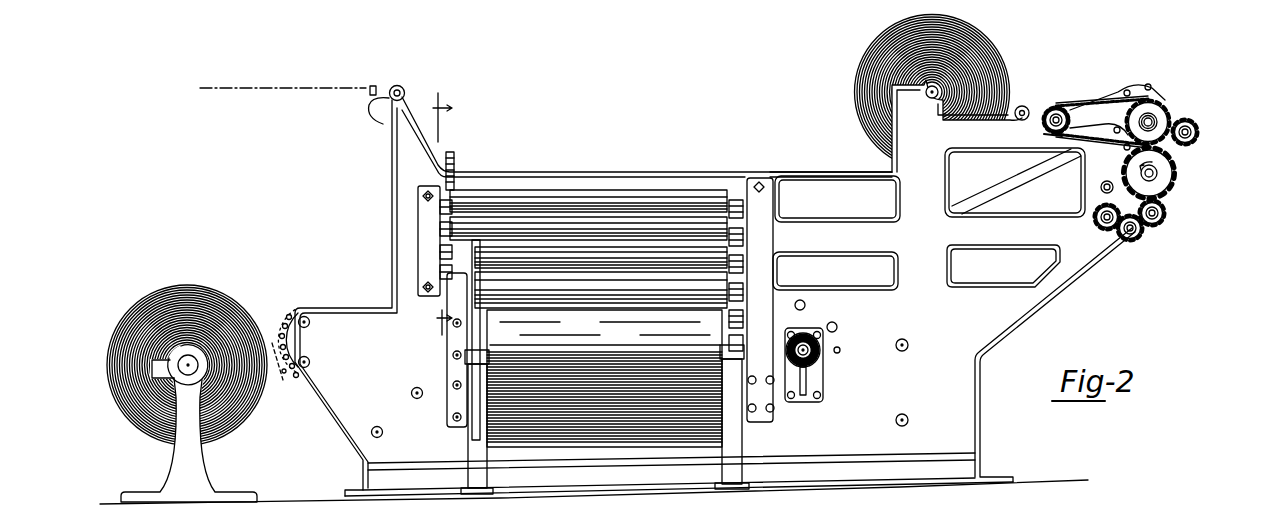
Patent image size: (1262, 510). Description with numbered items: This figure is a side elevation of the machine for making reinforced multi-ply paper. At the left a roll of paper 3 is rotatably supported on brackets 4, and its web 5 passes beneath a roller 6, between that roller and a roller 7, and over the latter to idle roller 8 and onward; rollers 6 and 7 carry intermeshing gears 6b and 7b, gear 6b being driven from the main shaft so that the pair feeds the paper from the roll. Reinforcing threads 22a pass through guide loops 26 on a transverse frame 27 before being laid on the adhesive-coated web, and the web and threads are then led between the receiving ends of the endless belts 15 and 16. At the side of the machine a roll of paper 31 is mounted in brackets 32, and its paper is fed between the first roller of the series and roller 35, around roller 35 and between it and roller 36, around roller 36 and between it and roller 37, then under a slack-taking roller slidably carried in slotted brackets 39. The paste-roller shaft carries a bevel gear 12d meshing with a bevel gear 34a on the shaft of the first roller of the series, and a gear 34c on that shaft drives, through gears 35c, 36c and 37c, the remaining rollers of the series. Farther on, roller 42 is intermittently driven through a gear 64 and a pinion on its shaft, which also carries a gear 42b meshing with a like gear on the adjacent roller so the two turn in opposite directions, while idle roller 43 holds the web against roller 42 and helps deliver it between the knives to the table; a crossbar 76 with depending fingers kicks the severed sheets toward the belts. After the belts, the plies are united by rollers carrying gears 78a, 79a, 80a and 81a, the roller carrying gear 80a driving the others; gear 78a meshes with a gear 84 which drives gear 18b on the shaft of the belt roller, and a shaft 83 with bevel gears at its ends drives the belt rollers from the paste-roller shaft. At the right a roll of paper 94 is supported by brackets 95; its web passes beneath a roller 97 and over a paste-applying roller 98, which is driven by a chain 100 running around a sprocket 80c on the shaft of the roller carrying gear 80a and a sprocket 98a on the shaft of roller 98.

The roll of paper 3 is at (151, 301).
The brackets 4 is at (197, 460).
The web 5 is at (272, 343).
The roller 6 is at (296, 380).
The gear 6b is at (283, 375).
The roller 7 is at (293, 312).
The gear 7b is at (302, 310).
The idle roller 8 is at (436, 214).
The bevel gear 12d is at (823, 338).
The endless belt 15 is at (864, 172).
The endless belt 16 is at (886, 216).
The gear 18b is at (1103, 230).
The reinforcing threads 22a is at (262, 84).
The guide loops 26 is at (374, 86).
The transverse frame 27 is at (369, 102).
The roll of paper 31 is at (604, 378).
The brackets 32 is at (470, 445).
The bevel gear 34a is at (806, 379).
The gear 34c is at (745, 346).
The roller 35 is at (480, 330).
The gear 35c is at (745, 316).
The roller 36 is at (601, 289).
The gear 36c is at (742, 283).
The roller 37 is at (601, 254).
The gear 37c is at (742, 251).
The brackets 39 is at (447, 302).
The roller 42 is at (588, 227).
The gear 42b is at (748, 222).
The idle roller 43 is at (600, 192).
The gear 64 is at (432, 241).
The crossbar 76 is at (848, 492).
The gear 78a is at (1167, 215).
The gear 79a is at (1178, 173).
The gear 80a is at (1166, 108).
The sprocket 80c is at (1130, 140).
The gear 81a is at (1200, 132).
The shaft 83 is at (1046, 195).
The gear 84 is at (1131, 242).
The roll of paper 94 is at (976, 52).
The brackets 95 is at (957, 126).
The roller 97 is at (1015, 122).
The roller 98 is at (1056, 105).
The sprocket 98a is at (1056, 134).
The chain 100 is at (1100, 103).